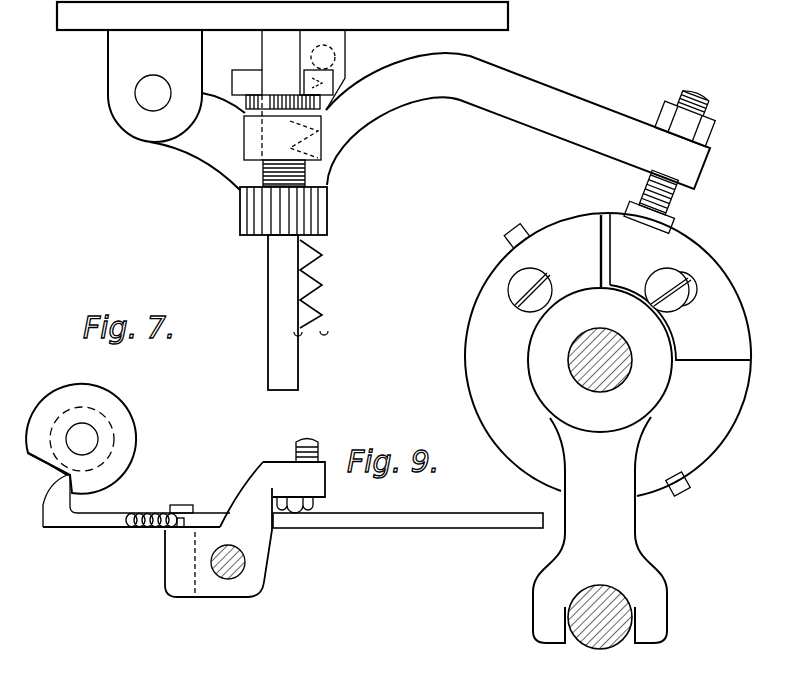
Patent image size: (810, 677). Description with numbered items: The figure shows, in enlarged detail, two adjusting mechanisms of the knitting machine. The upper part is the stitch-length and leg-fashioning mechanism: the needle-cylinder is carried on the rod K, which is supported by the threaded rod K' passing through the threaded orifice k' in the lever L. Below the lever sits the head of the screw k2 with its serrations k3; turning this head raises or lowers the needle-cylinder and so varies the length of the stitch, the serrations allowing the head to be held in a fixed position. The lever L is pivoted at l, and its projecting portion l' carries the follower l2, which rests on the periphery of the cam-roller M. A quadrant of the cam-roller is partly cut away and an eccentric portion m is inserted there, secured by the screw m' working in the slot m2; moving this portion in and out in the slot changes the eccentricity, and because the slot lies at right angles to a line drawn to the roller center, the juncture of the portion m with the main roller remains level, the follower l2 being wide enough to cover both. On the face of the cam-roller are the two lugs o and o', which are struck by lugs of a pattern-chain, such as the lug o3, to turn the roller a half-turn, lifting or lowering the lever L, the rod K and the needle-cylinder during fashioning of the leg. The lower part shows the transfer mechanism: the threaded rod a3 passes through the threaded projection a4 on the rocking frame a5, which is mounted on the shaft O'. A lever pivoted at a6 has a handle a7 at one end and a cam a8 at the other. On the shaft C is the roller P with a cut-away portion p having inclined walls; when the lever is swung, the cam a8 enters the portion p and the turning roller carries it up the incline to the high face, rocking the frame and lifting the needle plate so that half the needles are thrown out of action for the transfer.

In FIG. 7, the pivot l is at (176, 110).
In FIG. 7, the rod K is at (288, 70).
In FIG. 7, the threaded orifice k' is at (269, 127).
In FIG. 7, the rod K' is at (244, 178).
In FIG. 7, the screw head k2 is at (240, 232).
In FIG. 7, the serrations k3 is at (268, 232).
In FIG. 7, the lever L is at (363, 118).
In FIG. 7, the projecting portion l' is at (646, 114).
In FIG. 7, the follower l2 is at (641, 207).
In FIG. 9, the cam-roller M is at (553, 230).
In FIG. 9, the eccentric portion m is at (675, 287).
In FIG. 9, the screw m' is at (669, 277).
In FIG. 9, the slot m2 is at (692, 286).
In FIG. 9, the lug o' is at (496, 235).
In FIG. 9, the lug o is at (692, 485).
In FIG. 9, the shaft O' is at (439, 545).
In FIG. 9, the roller P is at (126, 394).
In FIG. 9, the shaft C is at (88, 443).
In FIG. 9, the cut-away portion p is at (44, 468).
In FIG. 9, the cam a8 is at (43, 500).
In FIG. 9, the pivot a6 is at (192, 504).
In FIG. 9, the rocking frame a5 is at (257, 565).
In FIG. 9, the threaded projection a4 is at (328, 480).
In FIG. 9, the rod a3 is at (315, 440).
In FIG. 9, the handle a7 is at (498, 510).
In FIG. 9, the lug o3 is at (393, 521).